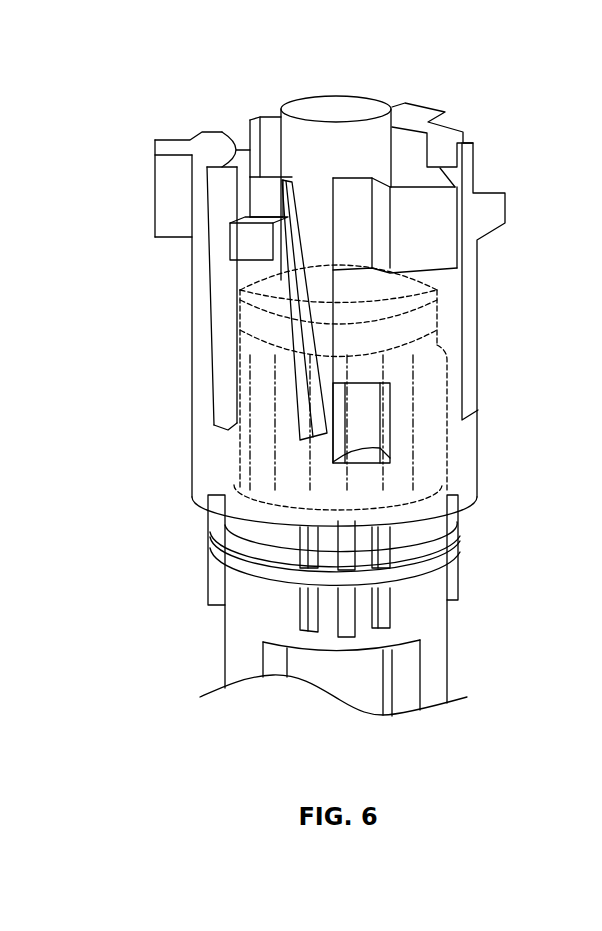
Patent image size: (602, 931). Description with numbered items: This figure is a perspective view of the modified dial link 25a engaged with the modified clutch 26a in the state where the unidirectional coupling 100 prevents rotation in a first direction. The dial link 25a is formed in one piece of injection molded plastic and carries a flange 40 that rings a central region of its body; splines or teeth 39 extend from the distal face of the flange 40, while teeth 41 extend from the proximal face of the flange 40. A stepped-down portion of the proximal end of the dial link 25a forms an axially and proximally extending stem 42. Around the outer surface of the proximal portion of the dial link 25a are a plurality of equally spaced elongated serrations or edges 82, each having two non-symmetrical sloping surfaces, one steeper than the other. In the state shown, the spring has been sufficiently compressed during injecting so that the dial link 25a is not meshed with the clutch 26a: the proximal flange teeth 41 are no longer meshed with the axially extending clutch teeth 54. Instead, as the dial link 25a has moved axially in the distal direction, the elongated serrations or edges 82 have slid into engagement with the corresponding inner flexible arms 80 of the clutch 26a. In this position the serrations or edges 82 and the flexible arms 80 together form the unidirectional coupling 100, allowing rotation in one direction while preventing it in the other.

The stem 42 is at (333, 106).
The clutch 26a is at (432, 237).
The unidirectional coupling 100 is at (490, 306).
The inner flexible arms 80 is at (372, 411).
The clutch teeth 54 is at (480, 457).
The elongated serrations or edges 82 is at (240, 447).
The splines or teeth 39 is at (437, 535).
The flange 40 is at (452, 555).
The teeth 41 is at (340, 620).
The dial link 25a is at (455, 634).